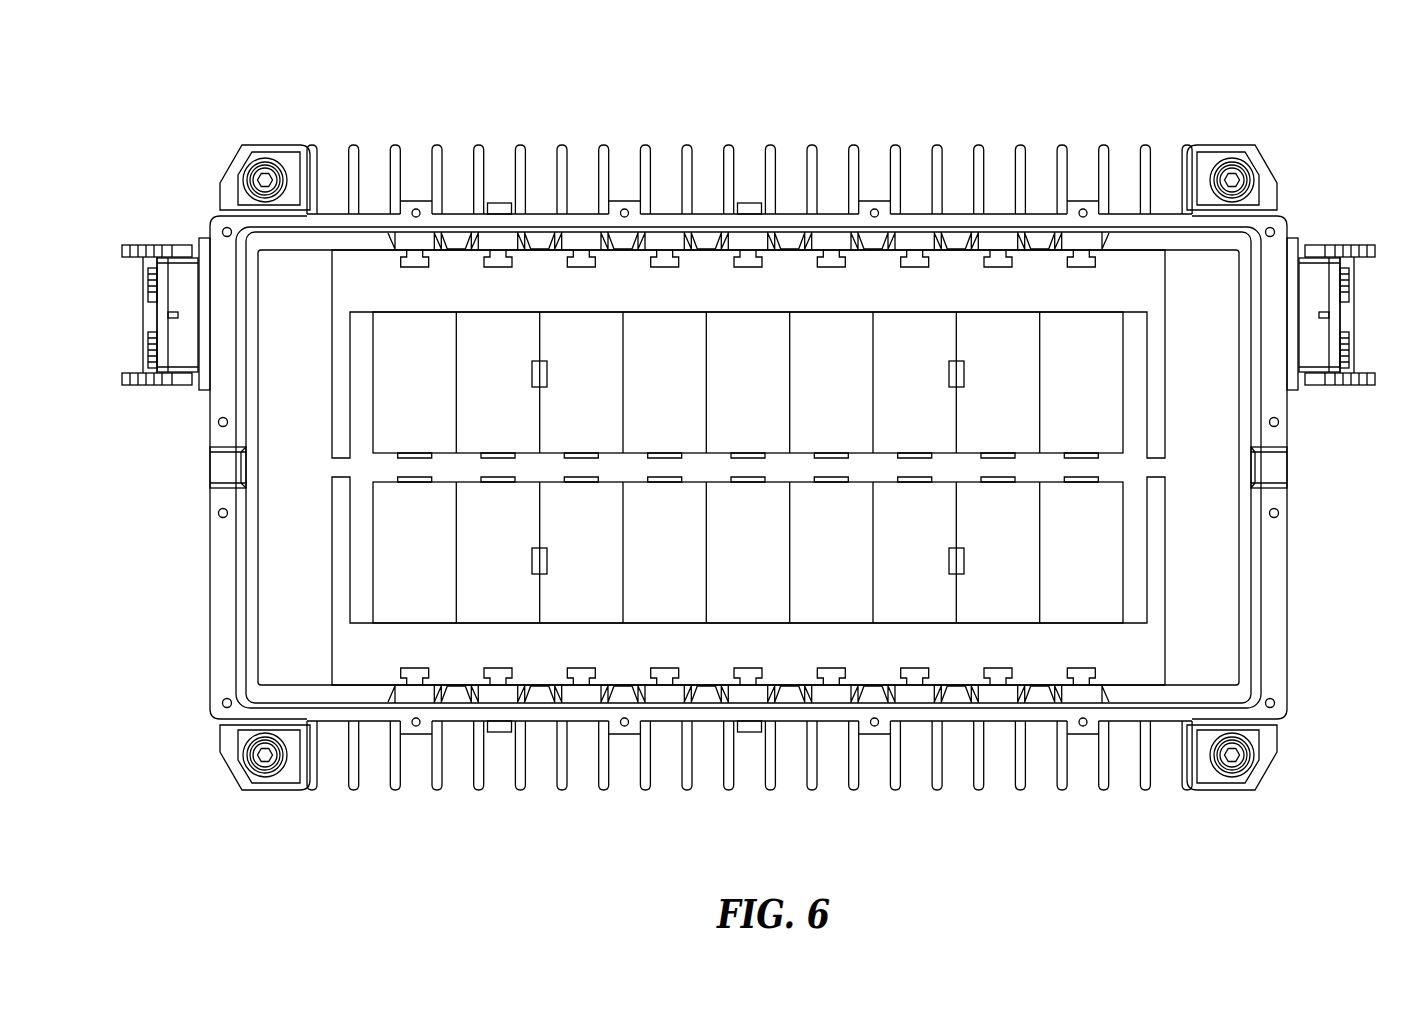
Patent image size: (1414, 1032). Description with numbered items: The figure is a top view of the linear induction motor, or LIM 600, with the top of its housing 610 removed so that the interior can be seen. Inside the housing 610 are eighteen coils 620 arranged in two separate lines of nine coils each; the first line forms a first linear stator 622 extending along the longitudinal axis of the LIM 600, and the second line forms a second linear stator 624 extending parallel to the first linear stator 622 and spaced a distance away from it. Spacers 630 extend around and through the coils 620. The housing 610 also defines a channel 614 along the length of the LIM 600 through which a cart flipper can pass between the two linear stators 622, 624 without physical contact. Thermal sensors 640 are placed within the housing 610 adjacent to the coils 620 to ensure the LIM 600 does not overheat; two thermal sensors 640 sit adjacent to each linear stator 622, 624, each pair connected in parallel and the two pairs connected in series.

The linear induction motor (LIM) 600 is at (140, 110).
The housing 610 is at (210, 648).
The channel 614 is at (220, 448).
The coils 620 is at (832, 314).
The first linear stator 622 is at (1237, 577).
The second linear stator 624 is at (1232, 408).
The spacers 630 is at (330, 292).
The thermal sensors 640 is at (539, 361).